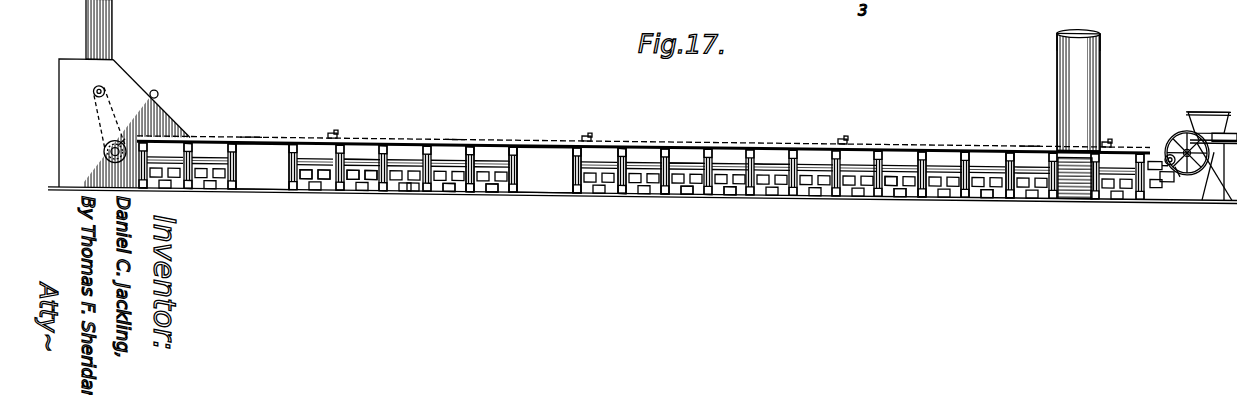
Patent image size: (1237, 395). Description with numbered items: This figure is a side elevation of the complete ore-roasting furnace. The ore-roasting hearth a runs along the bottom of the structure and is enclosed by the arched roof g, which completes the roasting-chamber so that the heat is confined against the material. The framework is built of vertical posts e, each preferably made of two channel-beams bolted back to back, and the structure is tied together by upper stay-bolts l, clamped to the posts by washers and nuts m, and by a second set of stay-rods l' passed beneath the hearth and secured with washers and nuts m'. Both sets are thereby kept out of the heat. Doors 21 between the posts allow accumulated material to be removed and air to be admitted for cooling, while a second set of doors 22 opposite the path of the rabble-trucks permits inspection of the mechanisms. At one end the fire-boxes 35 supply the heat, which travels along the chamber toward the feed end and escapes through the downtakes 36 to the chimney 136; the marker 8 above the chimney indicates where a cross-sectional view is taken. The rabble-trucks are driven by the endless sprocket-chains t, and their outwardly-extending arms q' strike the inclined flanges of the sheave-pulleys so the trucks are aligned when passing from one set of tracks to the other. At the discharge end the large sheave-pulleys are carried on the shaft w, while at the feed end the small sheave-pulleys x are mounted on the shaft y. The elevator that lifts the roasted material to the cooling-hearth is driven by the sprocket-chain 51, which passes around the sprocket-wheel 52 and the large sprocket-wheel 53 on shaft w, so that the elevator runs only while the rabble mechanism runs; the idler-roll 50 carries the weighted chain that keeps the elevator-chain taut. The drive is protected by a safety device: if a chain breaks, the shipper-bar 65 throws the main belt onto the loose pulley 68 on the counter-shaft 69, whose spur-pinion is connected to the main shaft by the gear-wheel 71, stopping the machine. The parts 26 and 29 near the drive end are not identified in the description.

The stack 8 is at (1078, 29).
The chimney 136 is at (1056, 68).
The fire-boxes 35 is at (404, 168).
The downtakes 36 is at (1075, 177).
The idler-roll 50 is at (157, 92).
The sprocket-chain 51 is at (113, 112).
The sprocket-wheel 52 is at (96, 89).
The large sprocket-wheel 53 is at (104, 154).
The shaft w is at (120, 146).
The endless sprocket-chains t is at (250, 134).
The outwardly-extending arms q' is at (714, 123).
The arched roof g is at (400, 156).
The stay-bolts l is at (491, 148).
The washers and nuts m is at (786, 155).
The vertical posts e is at (1007, 146).
The washers and nuts m' is at (837, 202).
The second set of stay-rods l' is at (733, 204).
The doors 21 is at (485, 186).
The second set of doors 22 is at (306, 172).
The shipper-bar 65 is at (1198, 122).
The loose pulley 68 is at (1178, 119).
The hopper 26 is at (1216, 103).
The platform 29 is at (1180, 116).
The gear-wheel 71 is at (1171, 129).
The counter-shaft 69 is at (1187, 146).
The small sheave-pulleys x is at (1172, 156).
The ore-roasting hearth a is at (1176, 170).
The shaft y is at (1170, 153).